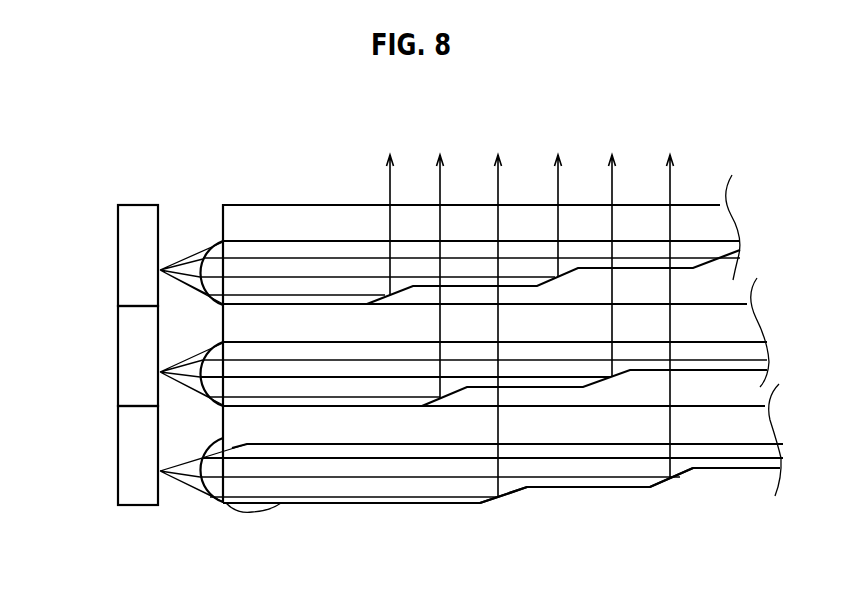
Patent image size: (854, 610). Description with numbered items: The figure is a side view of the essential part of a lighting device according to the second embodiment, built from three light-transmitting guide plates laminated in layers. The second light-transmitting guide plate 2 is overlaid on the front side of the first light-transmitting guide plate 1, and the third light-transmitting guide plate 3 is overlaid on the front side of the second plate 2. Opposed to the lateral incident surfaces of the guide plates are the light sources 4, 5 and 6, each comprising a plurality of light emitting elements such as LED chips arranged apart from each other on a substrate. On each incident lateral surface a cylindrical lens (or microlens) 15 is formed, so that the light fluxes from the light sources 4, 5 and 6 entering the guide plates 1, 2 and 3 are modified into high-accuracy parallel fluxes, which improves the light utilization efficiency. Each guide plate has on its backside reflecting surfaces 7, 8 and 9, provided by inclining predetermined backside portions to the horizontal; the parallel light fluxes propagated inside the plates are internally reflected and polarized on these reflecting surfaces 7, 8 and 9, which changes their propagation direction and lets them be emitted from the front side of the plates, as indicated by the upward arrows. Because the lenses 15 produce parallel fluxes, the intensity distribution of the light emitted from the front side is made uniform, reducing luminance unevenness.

The first light-transmitting guide plate 1 is at (307, 488).
The second light-transmitting guide plate 2 is at (263, 325).
The third light-transmitting guide plate 3 is at (333, 228).
The first light source 4 is at (127, 462).
The second light source 5 is at (127, 362).
The third light source 6 is at (127, 257).
The reflecting surface 7 is at (492, 498).
The reflecting surface 8 is at (466, 389).
The reflecting surface 9 is at (403, 292).
The cylindrical lens 15 is at (222, 240).